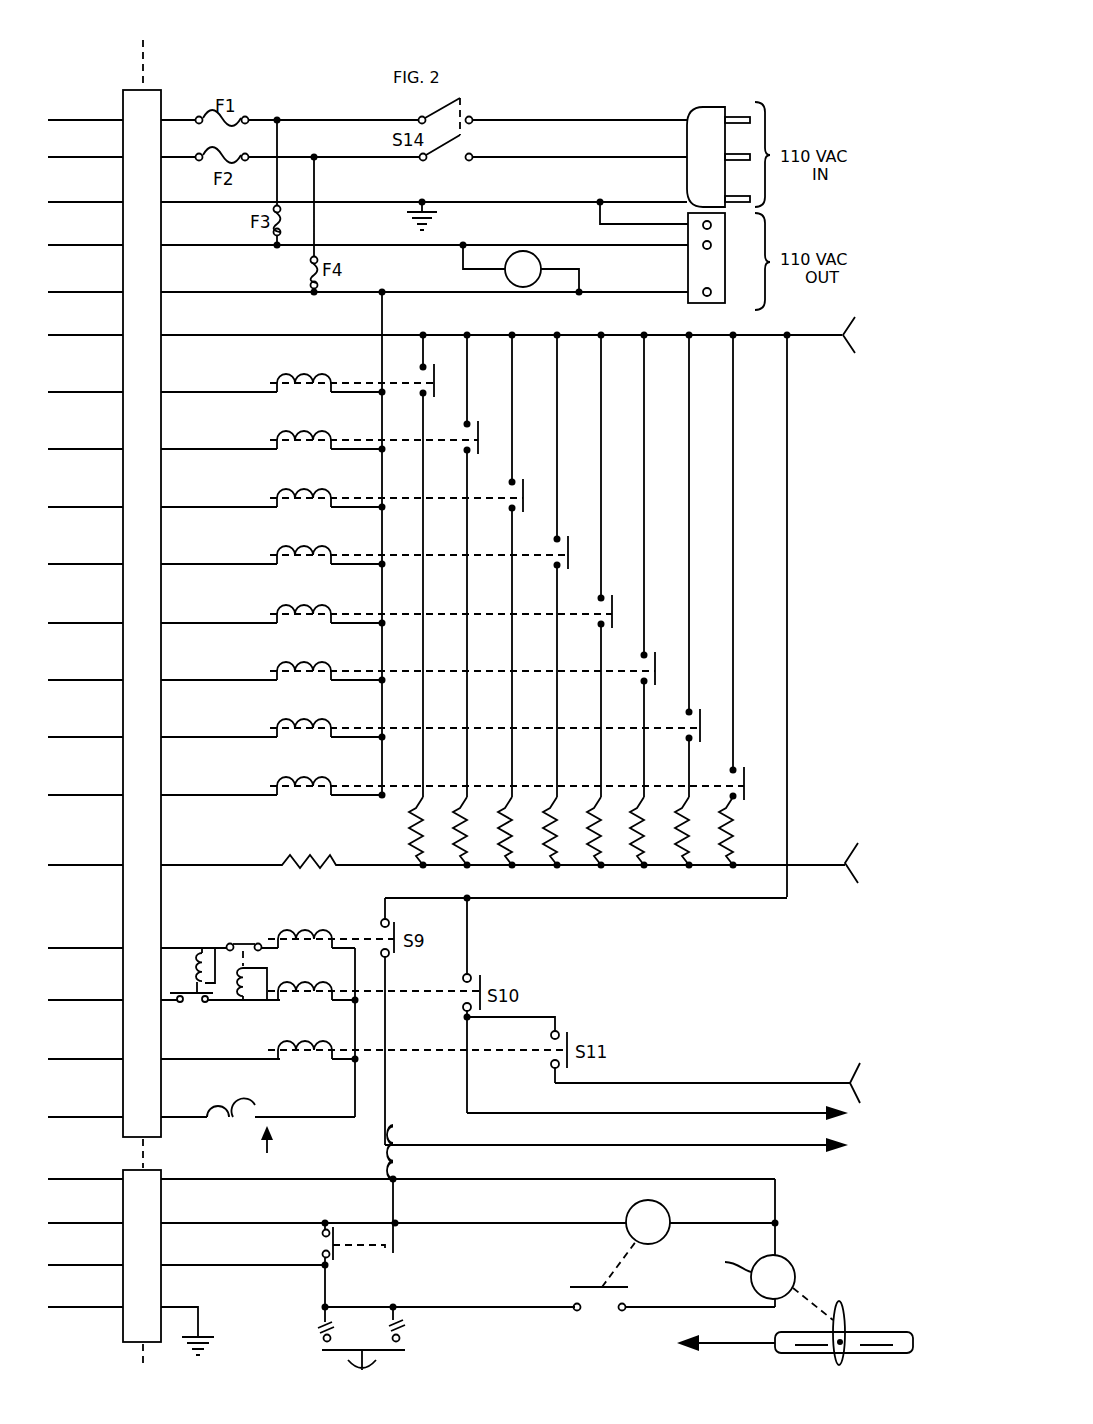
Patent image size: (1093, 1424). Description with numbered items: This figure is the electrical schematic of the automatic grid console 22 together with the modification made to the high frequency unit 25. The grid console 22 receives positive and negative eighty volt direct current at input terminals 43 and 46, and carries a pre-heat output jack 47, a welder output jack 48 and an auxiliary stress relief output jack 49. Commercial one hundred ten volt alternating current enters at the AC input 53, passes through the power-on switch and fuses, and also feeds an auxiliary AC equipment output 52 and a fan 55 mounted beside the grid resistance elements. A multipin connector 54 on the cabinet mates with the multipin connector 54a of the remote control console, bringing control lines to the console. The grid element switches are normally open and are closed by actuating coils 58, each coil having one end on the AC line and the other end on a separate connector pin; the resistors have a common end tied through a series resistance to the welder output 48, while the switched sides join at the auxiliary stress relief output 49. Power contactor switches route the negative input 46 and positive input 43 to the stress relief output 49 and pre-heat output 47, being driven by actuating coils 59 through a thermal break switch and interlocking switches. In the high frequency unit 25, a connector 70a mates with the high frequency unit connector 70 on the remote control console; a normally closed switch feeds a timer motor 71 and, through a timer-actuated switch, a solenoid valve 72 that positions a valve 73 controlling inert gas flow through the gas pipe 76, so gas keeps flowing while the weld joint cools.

The automatic grid console 22 is at (815, 615).
The high frequency unit 25 is at (382, 1174).
The positive 80 VDC input terminal 43 is at (840, 1102).
The negative 80 VDC input terminal 46 is at (840, 1134).
The pre-heat output jack 47 is at (850, 1072).
The welder output jack 48 is at (805, 862).
The auxiliary stress relief output jack 49 is at (803, 338).
The auxiliary AC equipment output 52 is at (688, 300).
The AC input 53 is at (718, 108).
The multipin connector 54 is at (160, 91).
The multipin connector 54a is at (124, 91).
The fan 55 is at (530, 254).
The actuating coils 58 is at (270, 380).
The actuating coils 59 is at (343, 928).
The high frequency unit connector 70 is at (123, 1172).
The connector 70a is at (163, 1172).
The timer motor 71 is at (670, 1212).
The solenoid valve 72 is at (792, 1265).
The valve 73 is at (845, 1310).
The gas pipe 76 is at (878, 1333).